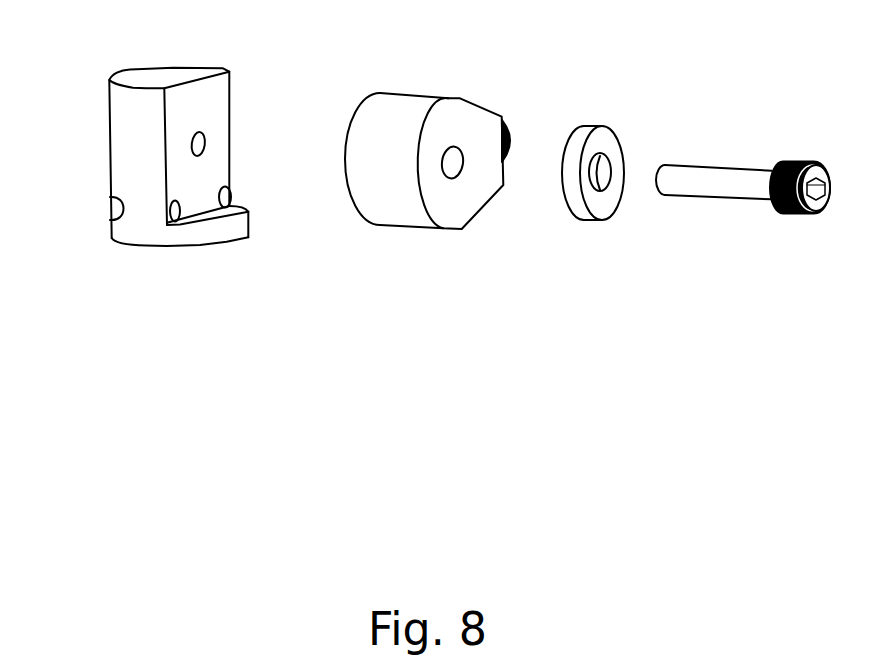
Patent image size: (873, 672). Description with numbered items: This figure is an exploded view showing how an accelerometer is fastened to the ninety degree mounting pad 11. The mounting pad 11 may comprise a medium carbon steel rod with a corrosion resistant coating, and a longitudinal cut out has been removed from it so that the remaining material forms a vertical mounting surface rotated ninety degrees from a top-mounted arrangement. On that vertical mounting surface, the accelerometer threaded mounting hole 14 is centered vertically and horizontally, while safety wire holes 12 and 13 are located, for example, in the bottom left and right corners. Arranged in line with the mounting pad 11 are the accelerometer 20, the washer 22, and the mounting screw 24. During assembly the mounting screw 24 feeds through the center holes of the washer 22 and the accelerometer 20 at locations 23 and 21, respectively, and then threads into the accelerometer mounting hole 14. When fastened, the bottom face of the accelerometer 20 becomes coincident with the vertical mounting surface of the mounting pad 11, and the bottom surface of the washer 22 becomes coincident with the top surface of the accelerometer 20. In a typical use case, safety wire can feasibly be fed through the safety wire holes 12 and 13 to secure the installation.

The 90 degree mounting pad 11 is at (193, 238).
The safety wire hole 12 is at (230, 180).
The safety wire hole 13 is at (167, 218).
The accelerometer threaded mounting hole 14 is at (192, 148).
The accelerometer 20 is at (400, 108).
The center hole location of accelerometer 21 is at (453, 180).
The washer 22 is at (607, 142).
The center hole location of washer 23 is at (603, 192).
The mounting screw 24 is at (712, 178).